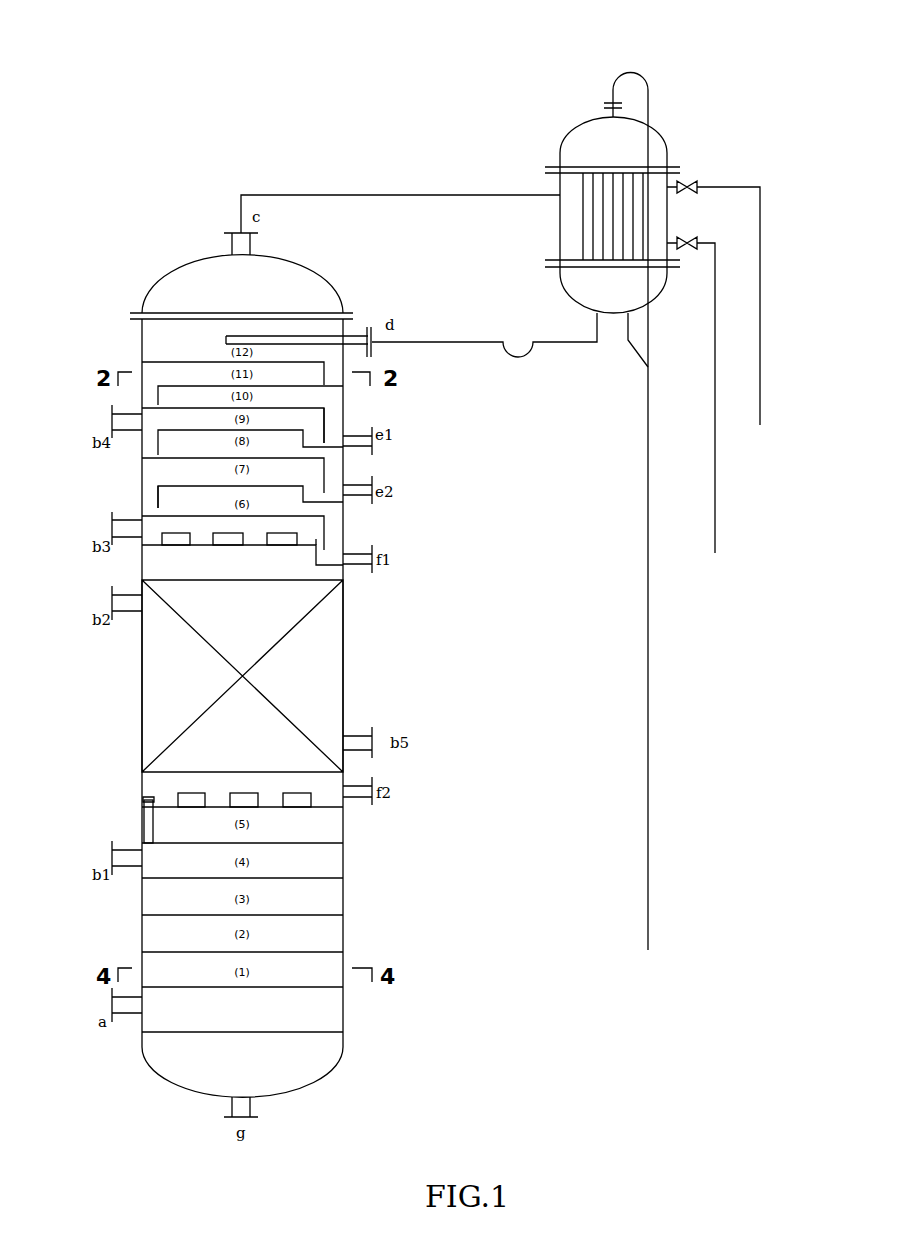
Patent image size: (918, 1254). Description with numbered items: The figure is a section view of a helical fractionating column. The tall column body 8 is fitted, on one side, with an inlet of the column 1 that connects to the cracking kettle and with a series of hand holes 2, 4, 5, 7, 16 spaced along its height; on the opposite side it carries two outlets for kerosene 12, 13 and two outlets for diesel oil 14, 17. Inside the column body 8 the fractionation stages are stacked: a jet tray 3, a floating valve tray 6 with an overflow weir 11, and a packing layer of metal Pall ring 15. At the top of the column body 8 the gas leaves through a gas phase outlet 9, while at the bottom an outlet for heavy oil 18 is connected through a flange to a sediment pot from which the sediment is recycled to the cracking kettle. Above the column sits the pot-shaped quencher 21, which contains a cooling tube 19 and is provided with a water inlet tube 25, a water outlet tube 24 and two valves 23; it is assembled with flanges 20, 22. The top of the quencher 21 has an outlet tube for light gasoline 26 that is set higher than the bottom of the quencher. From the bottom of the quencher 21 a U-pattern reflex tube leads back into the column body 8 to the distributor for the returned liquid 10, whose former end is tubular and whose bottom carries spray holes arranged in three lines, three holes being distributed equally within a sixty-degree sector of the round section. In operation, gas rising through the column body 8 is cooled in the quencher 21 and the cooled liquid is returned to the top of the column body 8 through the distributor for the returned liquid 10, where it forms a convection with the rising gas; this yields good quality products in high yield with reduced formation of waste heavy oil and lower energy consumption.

The inlet of the column 1 is at (112, 1003).
The hand hole 2 is at (112, 858).
The jet tray 3 is at (160, 822).
The hand hole 4 is at (112, 603).
The hand hole 5 is at (112, 528).
The floating valve tray 6 is at (175, 508).
The hand hole 7 is at (120, 422).
The column body 8 is at (165, 288).
The gas phase outlet 9 is at (235, 246).
The distributor for the returned liquid 10 is at (368, 328).
The overflow weir 11 is at (323, 427).
The outlet for kerosene 12 is at (372, 437).
The outlet for kerosene 13 is at (372, 490).
The outlet for diesel oil 14 is at (372, 555).
The packing layer of metal Pall ring 15 is at (330, 615).
The hand hole 16 is at (372, 740).
The outlet for diesel oil 17 is at (372, 790).
The outlet for heavy oil 18 is at (243, 1110).
The cooling tube 19 is at (570, 183).
The flange 20 is at (613, 103).
The quencher 21 is at (648, 92).
The flange 22 is at (680, 167).
The valve 23 is at (697, 243).
The water outlet tube 24 is at (760, 393).
The water inlet tube 25 is at (715, 520).
The outlet tube for light gasoline 26 is at (648, 848).